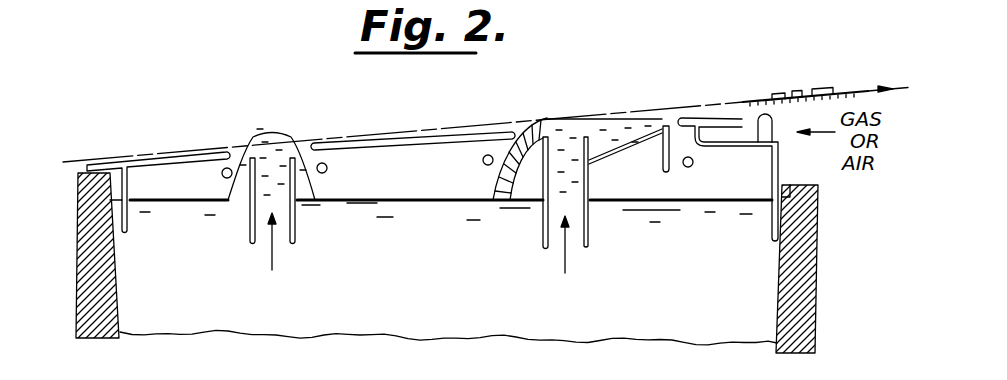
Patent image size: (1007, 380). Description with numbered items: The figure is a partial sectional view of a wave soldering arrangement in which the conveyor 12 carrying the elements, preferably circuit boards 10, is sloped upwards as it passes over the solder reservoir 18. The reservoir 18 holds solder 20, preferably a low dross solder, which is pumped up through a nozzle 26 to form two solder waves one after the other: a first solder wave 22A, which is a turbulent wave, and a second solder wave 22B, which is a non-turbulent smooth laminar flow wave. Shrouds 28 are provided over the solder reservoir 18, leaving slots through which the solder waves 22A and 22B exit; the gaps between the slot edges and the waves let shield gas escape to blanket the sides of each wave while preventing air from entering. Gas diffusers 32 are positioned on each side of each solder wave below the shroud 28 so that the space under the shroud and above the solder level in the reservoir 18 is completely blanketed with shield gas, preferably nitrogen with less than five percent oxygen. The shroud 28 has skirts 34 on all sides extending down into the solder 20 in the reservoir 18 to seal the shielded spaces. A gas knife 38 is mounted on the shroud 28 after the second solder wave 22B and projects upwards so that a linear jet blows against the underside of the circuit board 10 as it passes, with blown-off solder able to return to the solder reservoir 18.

The circuit board 10 is at (800, 90).
The conveyor 12 is at (437, 130).
The solder reservoir 18 is at (803, 302).
The solder 20 is at (402, 334).
The first solder wave 22A is at (270, 131).
The second solder wave 22B is at (550, 113).
The nozzle 26 is at (250, 236).
The shroud 28 is at (378, 147).
The gas diffuser 32 is at (222, 176).
The skirt 34 is at (128, 229).
The gas knife 38 is at (773, 137).